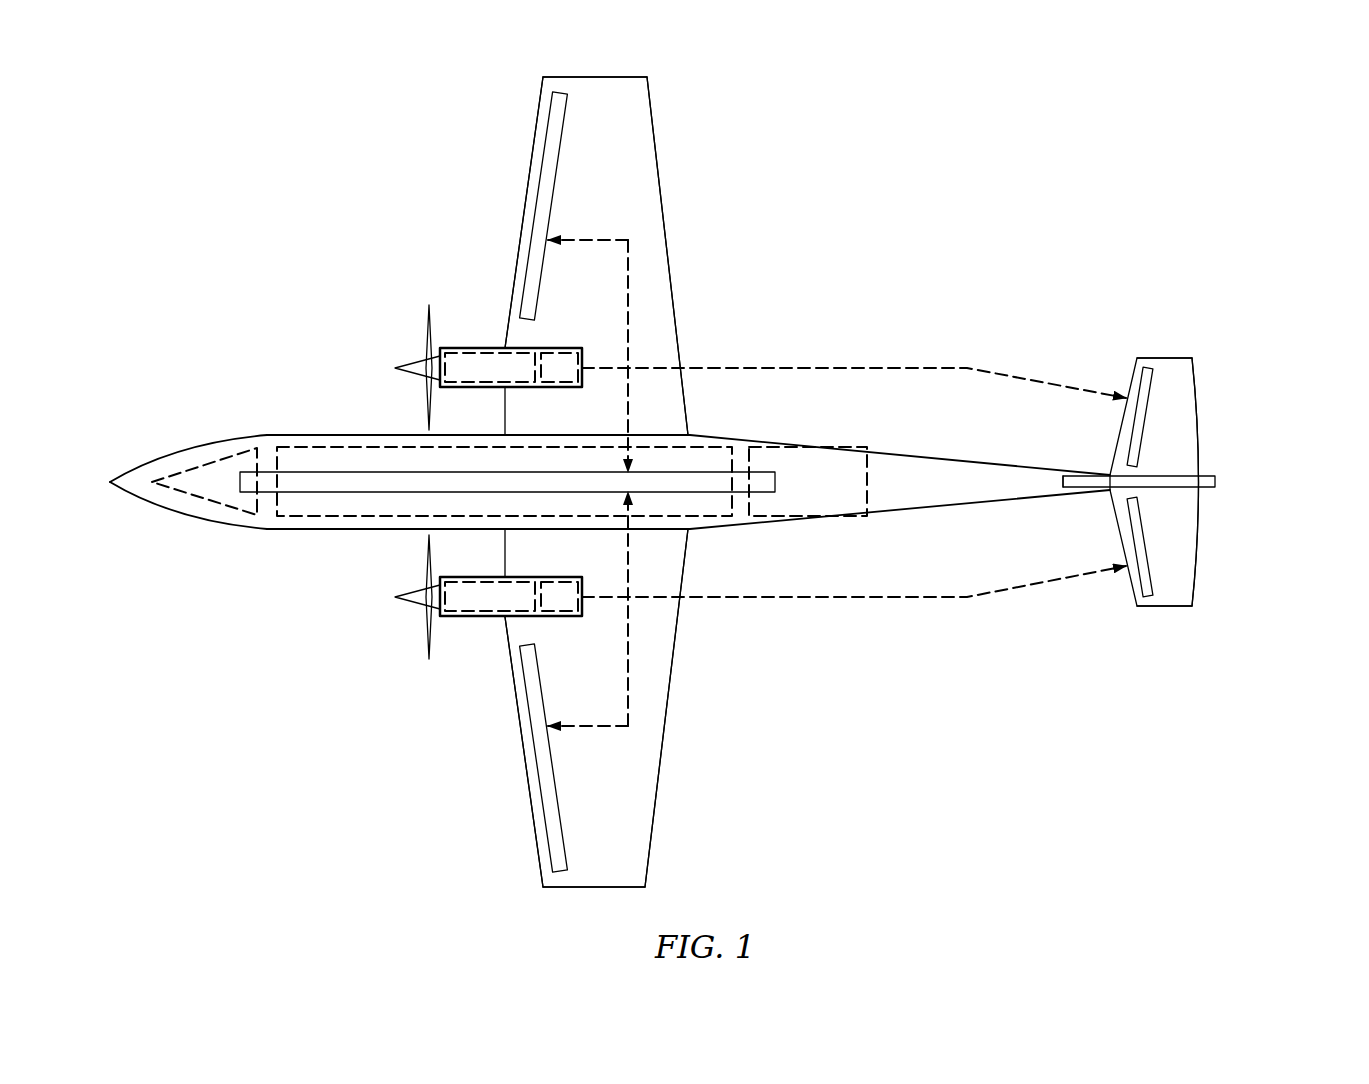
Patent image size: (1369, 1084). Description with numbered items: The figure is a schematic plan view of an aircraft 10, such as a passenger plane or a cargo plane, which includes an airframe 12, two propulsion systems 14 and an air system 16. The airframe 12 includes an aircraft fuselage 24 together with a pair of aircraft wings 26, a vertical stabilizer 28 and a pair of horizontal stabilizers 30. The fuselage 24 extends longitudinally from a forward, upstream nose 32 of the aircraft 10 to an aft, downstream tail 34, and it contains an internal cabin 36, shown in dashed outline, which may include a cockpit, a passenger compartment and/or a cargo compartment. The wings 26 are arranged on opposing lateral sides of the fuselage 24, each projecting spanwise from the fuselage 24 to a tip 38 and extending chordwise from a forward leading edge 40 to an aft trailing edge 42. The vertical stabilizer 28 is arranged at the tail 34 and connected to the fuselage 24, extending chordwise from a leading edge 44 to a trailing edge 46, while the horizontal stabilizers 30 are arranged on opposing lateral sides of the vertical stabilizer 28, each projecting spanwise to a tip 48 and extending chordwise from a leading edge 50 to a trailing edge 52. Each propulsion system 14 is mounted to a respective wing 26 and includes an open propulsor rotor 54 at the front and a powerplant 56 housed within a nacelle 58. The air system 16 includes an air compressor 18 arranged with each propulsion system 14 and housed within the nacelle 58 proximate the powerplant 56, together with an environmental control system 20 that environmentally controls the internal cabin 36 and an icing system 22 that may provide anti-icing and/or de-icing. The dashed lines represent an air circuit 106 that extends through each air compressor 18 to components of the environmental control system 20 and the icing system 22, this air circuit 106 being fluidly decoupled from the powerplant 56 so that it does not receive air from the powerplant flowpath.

The aircraft 10 is at (222, 152).
The airframe 12 is at (589, 470).
The propulsion system 14 is at (477, 330).
The air system 16 is at (780, 358).
The air compressor 18 is at (560, 346).
The environmental control system 20 is at (295, 497).
The icing system 22 is at (528, 847).
The aircraft fuselage 24 is at (276, 440).
The aircraft wing 26 is at (647, 198).
The vertical stabilizer 28 is at (1172, 490).
The horizontal stabilizer 30 is at (1183, 413).
The nose 32 is at (110, 482).
The tail 34 is at (1200, 487).
The internal cabin 36 is at (195, 508).
The wing tip 38 is at (607, 77).
The wing leading edge 40 is at (525, 183).
The wing trailing edge 42 is at (658, 160).
The vertical stabilizer leading edge 44 is at (1063, 483).
The vertical stabilizer trailing edge 46 is at (1215, 481).
The horizontal stabilizer tip 48 is at (1163, 358).
The horizontal stabilizer leading edge 50 is at (1130, 372).
The horizontal stabilizer trailing edge 52 is at (1195, 375).
The open propulsor rotor 54 is at (427, 333).
The propulsion system powerplant 56 is at (465, 383).
The nacelle 58 is at (555, 388).
The air circuit 106 is at (725, 367).